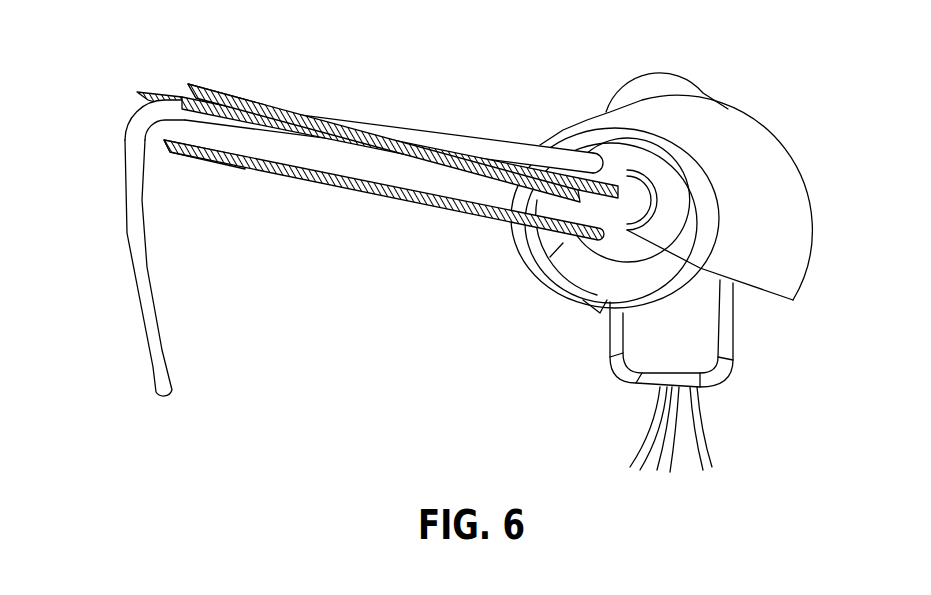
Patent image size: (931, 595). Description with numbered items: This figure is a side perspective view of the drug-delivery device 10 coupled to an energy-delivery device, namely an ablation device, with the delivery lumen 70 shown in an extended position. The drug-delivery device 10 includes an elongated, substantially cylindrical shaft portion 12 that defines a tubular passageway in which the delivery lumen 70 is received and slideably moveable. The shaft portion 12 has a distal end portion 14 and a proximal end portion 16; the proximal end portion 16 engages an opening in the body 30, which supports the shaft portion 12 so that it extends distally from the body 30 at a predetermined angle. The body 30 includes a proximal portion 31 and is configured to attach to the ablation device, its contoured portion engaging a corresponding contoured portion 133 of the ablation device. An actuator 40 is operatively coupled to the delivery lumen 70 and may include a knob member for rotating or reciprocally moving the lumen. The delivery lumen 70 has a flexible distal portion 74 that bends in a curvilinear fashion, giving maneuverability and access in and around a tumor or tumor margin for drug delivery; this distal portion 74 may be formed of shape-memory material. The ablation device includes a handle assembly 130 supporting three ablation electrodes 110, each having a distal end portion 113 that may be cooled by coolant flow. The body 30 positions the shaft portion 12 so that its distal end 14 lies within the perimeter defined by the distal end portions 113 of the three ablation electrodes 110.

The drug-delivery device 10 is at (792, 82).
The shaft portion 12 is at (436, 124).
The distal end portion 14 is at (187, 100).
The proximal end portion 16 is at (590, 157).
The body 30 is at (790, 140).
The proximal portion 31 is at (793, 247).
The actuator 40 is at (708, 72).
The delivery lumen 70 is at (137, 262).
The distal portion 74 is at (118, 138).
The ablation electrodes 110 is at (290, 107).
The distal end portion 113 is at (150, 88).
The handle assembly 130 is at (748, 370).
The contoured portion 133 is at (597, 316).